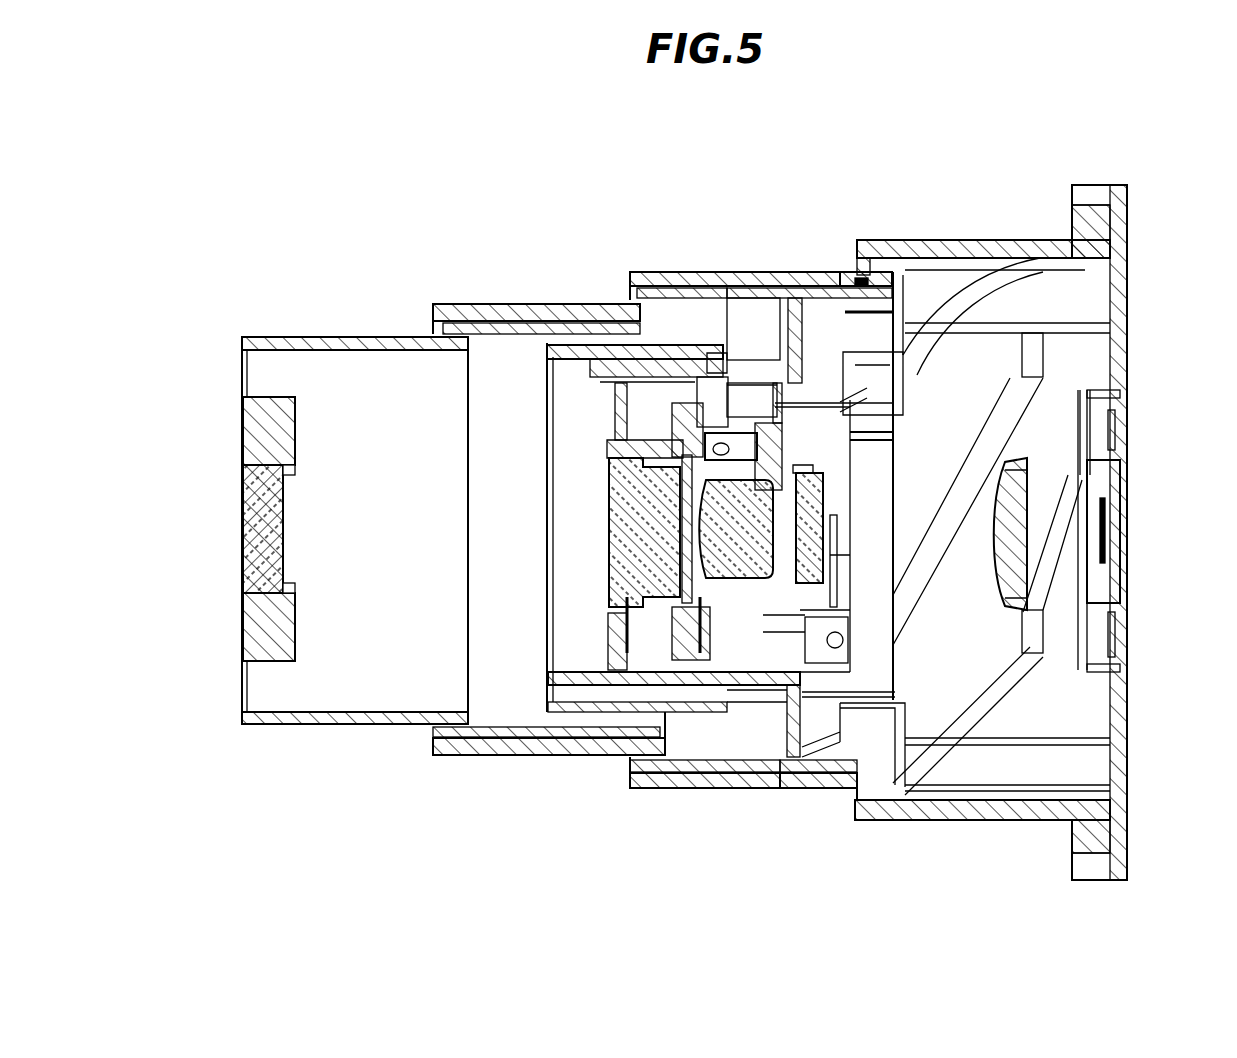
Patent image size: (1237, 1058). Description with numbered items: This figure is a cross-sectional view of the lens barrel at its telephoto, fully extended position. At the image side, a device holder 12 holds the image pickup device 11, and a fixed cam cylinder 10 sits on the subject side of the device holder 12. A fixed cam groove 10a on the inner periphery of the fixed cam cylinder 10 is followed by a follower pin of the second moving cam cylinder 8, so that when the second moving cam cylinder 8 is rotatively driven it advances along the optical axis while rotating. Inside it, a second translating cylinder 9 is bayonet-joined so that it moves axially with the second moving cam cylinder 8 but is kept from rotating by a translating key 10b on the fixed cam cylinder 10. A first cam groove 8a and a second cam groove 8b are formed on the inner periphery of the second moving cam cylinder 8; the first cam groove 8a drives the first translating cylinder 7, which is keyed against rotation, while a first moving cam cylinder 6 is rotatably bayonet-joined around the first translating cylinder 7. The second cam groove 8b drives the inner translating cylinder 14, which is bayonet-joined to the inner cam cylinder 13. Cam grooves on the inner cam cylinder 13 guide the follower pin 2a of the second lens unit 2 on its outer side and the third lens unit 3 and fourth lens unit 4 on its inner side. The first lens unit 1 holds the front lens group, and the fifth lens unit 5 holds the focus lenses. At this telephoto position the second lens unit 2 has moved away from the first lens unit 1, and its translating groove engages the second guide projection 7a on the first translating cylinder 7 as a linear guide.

The first lens unit 1 is at (264, 543).
The second lens unit 2 is at (618, 570).
The follower pin 2a is at (723, 282).
The third lens unit 3 is at (737, 547).
The fourth lens unit 4 is at (817, 553).
The fifth lens unit 5 is at (993, 600).
The first moving cam cylinder 6 is at (520, 302).
The first translating cylinder 7 is at (462, 740).
The second guide projection 7a is at (678, 292).
The second moving cam cylinder 8 is at (655, 277).
The first cam groove 8a is at (847, 282).
The second cam groove 8b is at (835, 775).
The second translating cylinder 9 is at (878, 288).
The fixed cam cylinder 10 is at (978, 247).
The fixed cam groove 10a is at (1020, 387).
The translating key 10b is at (1003, 755).
The image pickup device 11 is at (1113, 535).
The device holder 12 is at (1115, 209).
The inner cam cylinder 13 is at (633, 690).
The inner translating cylinder 14 is at (797, 292).